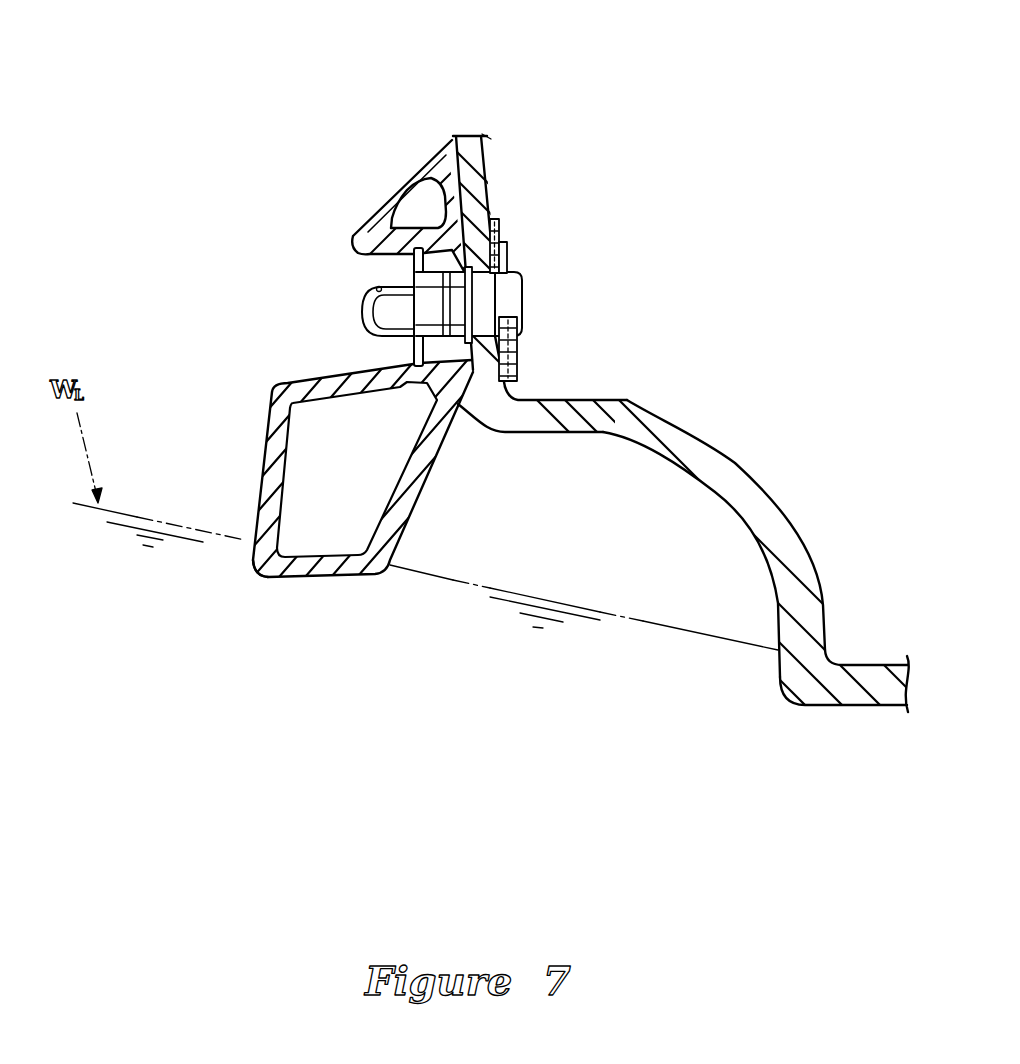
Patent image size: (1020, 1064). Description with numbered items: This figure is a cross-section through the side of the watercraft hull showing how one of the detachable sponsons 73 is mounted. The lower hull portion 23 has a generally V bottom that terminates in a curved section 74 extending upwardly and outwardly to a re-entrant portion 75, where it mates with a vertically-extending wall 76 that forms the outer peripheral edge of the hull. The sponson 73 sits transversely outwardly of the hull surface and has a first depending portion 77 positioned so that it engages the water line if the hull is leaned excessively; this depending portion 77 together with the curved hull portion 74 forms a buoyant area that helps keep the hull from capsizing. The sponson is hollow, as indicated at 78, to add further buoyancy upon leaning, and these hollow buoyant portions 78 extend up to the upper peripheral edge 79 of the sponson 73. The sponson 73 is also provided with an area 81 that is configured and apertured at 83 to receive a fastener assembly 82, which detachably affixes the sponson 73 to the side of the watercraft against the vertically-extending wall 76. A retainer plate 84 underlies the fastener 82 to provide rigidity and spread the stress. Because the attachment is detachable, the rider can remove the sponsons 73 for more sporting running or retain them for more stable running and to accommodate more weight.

The lower hull portion 23 is at (857, 707).
The sponson 73 is at (262, 467).
The curved section 74 is at (680, 462).
The re-entrant portion 75 is at (511, 432).
The vertically-extending wall 76 is at (470, 137).
The first depending portion 77 is at (250, 557).
The hollow buoyant portion 78 is at (421, 203).
The upper peripheral edge 79 is at (372, 226).
The mounting area 81 is at (512, 363).
The fastener assembly 82 is at (524, 298).
The aperture 83 is at (430, 365).
The retainer plate 84 is at (412, 270).